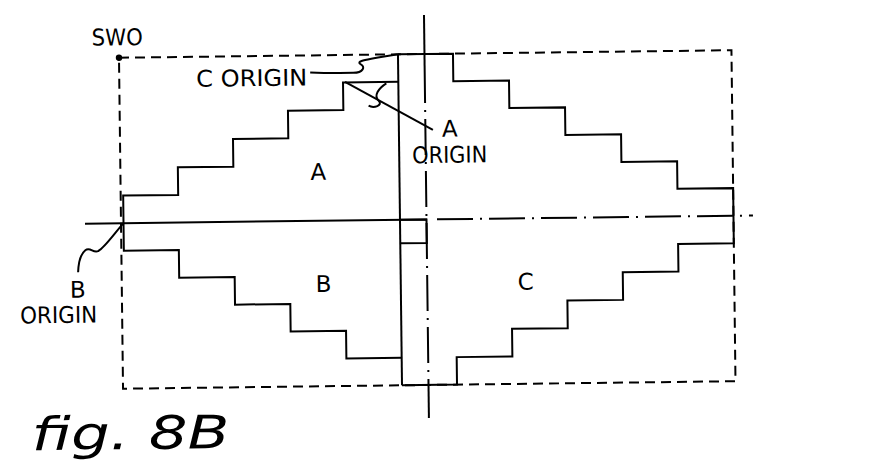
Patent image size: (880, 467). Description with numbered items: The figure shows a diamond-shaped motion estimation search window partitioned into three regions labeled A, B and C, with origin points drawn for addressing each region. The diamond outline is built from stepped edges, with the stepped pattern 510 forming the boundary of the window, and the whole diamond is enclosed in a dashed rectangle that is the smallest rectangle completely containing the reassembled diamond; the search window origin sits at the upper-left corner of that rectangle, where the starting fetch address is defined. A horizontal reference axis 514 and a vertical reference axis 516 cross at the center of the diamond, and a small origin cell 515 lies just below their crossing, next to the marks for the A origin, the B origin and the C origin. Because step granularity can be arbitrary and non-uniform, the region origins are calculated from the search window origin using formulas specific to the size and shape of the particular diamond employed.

The stepped pattern 510 is at (669, 162).
The horizontal reference axis 514 is at (98, 218).
The origin cell 515 is at (423, 244).
The vertical reference axis 516 is at (426, 25).